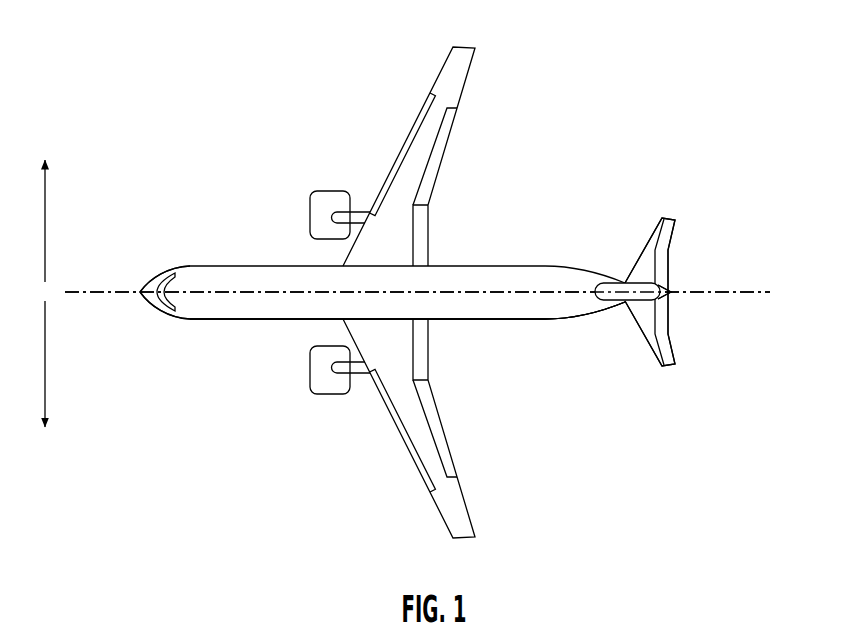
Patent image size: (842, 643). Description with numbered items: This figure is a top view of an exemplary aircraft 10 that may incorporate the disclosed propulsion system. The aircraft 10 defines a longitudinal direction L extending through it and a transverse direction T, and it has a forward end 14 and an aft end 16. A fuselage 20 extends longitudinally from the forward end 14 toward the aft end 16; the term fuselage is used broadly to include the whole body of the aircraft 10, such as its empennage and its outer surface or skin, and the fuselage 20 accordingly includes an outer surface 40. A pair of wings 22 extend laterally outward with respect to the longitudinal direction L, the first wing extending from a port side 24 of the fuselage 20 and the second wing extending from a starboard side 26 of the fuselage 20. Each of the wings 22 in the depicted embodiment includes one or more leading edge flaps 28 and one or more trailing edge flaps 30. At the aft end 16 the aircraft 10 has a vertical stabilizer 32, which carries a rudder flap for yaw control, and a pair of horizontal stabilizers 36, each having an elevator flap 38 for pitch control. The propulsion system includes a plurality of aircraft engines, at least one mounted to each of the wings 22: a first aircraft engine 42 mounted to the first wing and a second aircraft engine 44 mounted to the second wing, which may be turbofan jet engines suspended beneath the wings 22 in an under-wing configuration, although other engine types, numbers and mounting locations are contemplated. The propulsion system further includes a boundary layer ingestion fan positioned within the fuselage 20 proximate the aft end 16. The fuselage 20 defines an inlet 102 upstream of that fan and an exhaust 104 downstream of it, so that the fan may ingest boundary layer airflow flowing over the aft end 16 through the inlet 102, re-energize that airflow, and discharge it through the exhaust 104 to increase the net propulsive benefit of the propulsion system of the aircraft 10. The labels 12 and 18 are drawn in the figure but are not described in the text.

The aircraft 10 is at (417, 292).
The longitudinal centerline 12 is at (78, 290).
The forward end 14 is at (141, 313).
The aft end 16 is at (699, 326).
The nose radome 18 is at (197, 291).
The fuselage 20 is at (185, 310).
The wings 22 is at (460, 65).
The port side 24 is at (246, 331).
The starboard side 26 is at (251, 256).
The leading edge flaps 28 is at (402, 443).
The trailing edge flaps 30 is at (450, 440).
The vertical stabilizer 32 is at (622, 289).
The horizontal stabilizers 36 is at (655, 240).
The elevator flap 38 is at (672, 236).
The outer surface 40 is at (516, 305).
The first aircraft engine 42 is at (322, 401).
The second aircraft engine 44 is at (321, 184).
The inlet 102 is at (615, 316).
The exhaust 104 is at (676, 280).
The transverse direction T is at (45, 293).
The longitudinal direction L is at (752, 295).